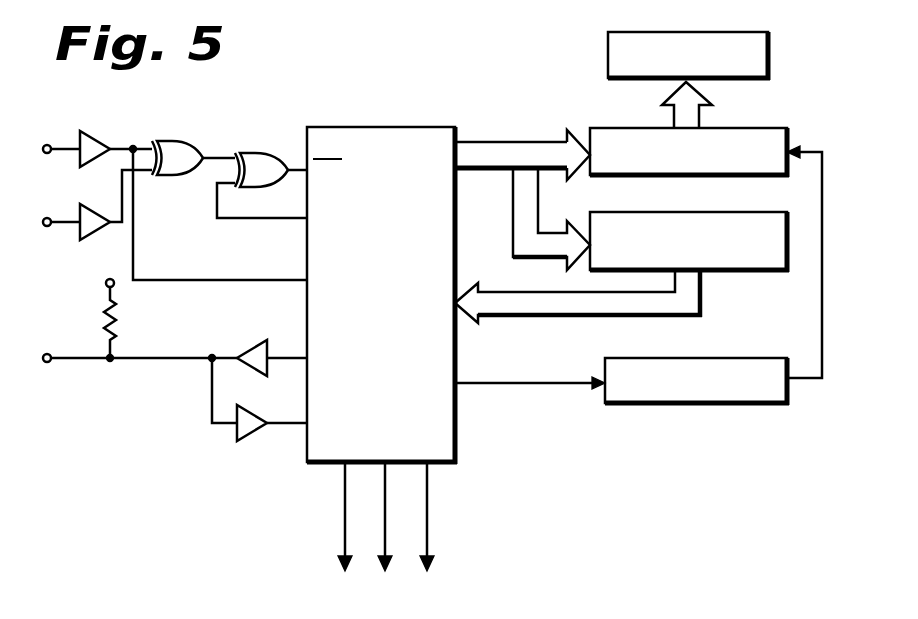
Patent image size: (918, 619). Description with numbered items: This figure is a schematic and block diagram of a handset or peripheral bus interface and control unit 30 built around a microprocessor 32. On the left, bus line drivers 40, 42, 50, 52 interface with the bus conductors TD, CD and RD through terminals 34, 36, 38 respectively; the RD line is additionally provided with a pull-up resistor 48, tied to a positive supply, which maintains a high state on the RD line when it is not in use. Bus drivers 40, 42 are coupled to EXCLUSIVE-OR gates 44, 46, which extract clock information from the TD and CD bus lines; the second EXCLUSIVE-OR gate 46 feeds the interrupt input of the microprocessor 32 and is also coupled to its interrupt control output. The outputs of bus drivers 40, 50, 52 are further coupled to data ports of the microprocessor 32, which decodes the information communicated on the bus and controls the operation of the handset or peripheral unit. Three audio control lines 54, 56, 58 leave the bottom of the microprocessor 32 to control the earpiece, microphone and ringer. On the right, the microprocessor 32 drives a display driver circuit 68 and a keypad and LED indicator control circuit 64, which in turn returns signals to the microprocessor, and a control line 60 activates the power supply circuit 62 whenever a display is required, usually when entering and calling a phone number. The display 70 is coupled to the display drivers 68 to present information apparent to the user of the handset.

The telephone circuit 30 is at (382, 73).
The microprocessor 32 is at (416, 127).
The terminal 34 is at (47, 153).
The terminal 36 is at (47, 226).
The terminal 38 is at (47, 362).
The bus line driver 40 is at (91, 132).
The bus line driver 42 is at (94, 204).
The EXCLUSIVE-OR gate 44 is at (178, 141).
The EXCLUSIVE-OR gate 46 is at (258, 153).
The pull-up resistor 48 is at (118, 318).
The bus line driver 50 is at (251, 341).
The bus line driver 52 is at (250, 440).
The audio control line 54 is at (344, 508).
The audio control line 56 is at (385, 532).
The audio control line 58 is at (427, 516).
The control line 60 is at (562, 387).
The power supply circuit 62 is at (768, 359).
The keypad and LED indicator control circuit 64 is at (772, 210).
The display driver circuit 68 is at (772, 129).
The display 70 is at (761, 33).